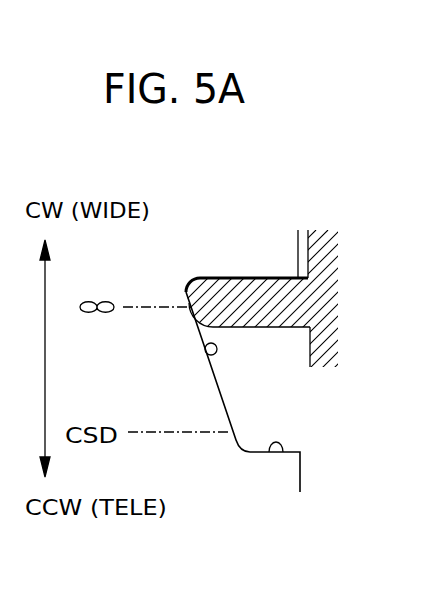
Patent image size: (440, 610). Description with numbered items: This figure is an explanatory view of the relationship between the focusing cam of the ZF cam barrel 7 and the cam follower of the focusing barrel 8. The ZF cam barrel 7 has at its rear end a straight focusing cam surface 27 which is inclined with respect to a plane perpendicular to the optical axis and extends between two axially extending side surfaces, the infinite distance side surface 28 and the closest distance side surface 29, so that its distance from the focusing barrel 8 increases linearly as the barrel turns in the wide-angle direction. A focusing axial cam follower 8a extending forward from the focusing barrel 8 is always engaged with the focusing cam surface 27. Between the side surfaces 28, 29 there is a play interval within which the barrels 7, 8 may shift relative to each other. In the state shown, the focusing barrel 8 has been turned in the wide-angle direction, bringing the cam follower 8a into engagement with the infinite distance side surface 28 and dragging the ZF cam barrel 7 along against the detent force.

The ZF cam barrel 7 is at (300, 490).
The focusing barrel 8 is at (328, 316).
The focusing axial cam follower 8a is at (220, 277).
The focusing cam surface 27 is at (205, 352).
The infinite distance side surface 28 is at (270, 277).
The closest distance side surface 29 is at (272, 453).